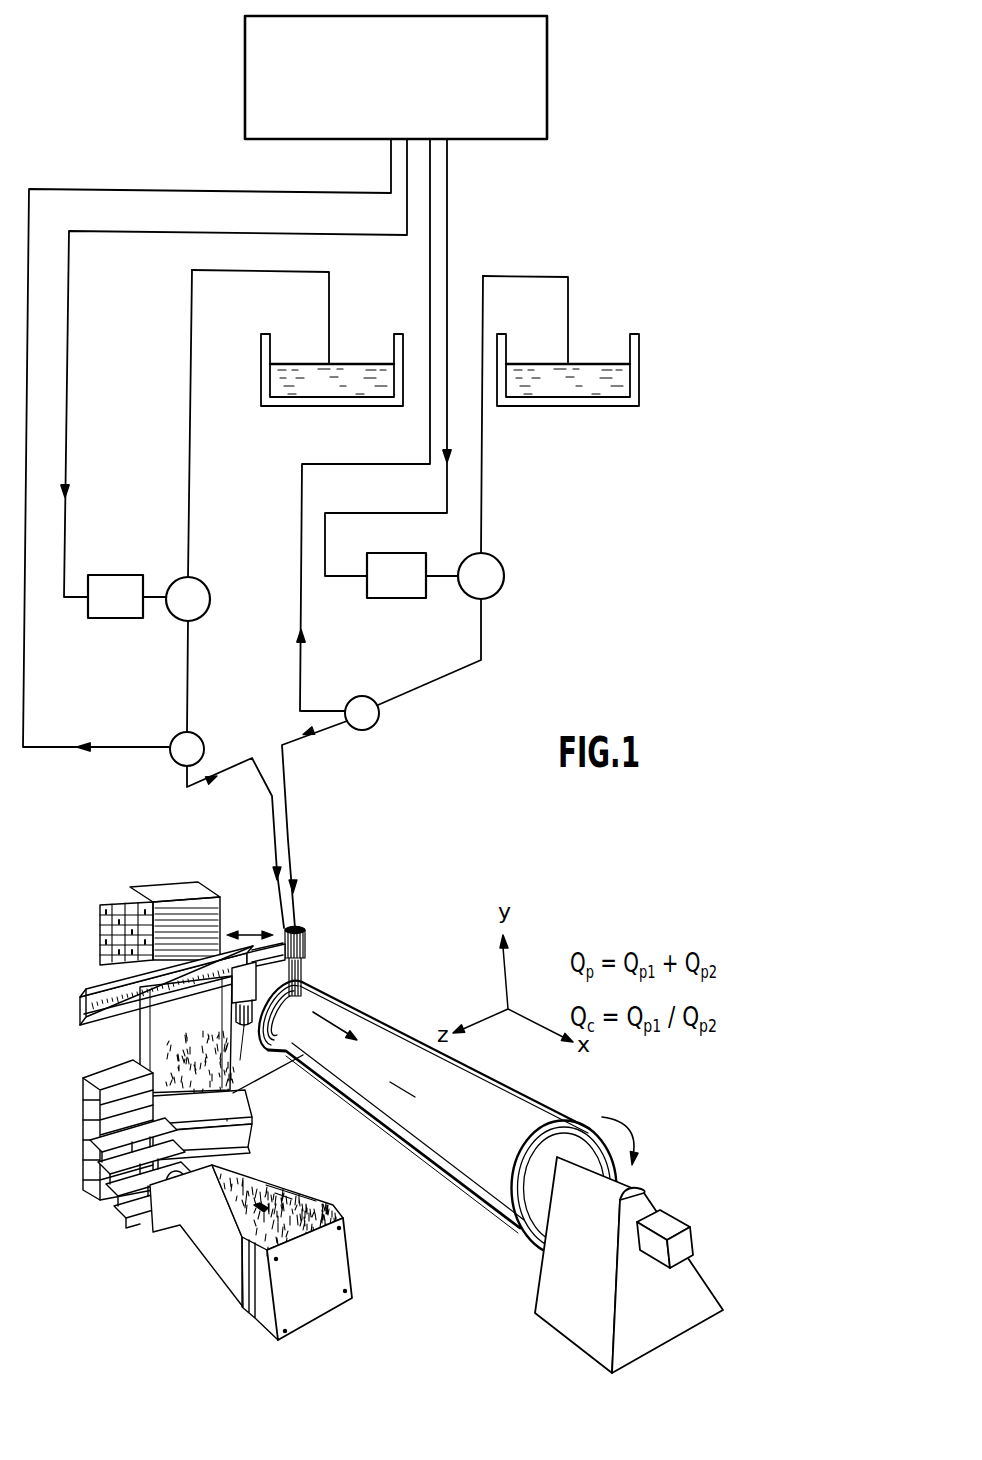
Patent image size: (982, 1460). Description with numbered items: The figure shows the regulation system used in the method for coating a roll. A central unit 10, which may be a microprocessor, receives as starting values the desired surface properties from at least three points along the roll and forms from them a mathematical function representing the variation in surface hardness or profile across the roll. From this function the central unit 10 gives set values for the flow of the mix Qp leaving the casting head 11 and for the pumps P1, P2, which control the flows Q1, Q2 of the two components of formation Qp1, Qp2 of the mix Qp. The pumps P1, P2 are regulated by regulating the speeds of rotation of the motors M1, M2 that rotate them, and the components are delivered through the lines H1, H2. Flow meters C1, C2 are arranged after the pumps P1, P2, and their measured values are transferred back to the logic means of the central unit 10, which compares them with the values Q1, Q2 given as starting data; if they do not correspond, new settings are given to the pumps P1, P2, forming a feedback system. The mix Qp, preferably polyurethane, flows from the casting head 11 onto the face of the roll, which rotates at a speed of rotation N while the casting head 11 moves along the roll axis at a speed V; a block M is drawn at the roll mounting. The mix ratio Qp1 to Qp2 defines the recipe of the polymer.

The central unit 10 is at (533, 75).
The casting head 11 is at (303, 933).
The first component of formation Qp1 is at (325, 383).
The second component of formation Qp2 is at (562, 383).
The first motor M1 is at (101, 604).
The second motor M2 is at (381, 581).
The first pump P1 is at (203, 601).
The second pump P2 is at (499, 578).
The first hose H1 is at (188, 666).
The second hose H2 is at (412, 688).
The first flow meter C1 is at (182, 758).
The second flow meter C2 is at (358, 723).
The flow of first component Q1 is at (220, 775).
The flow of second component Q2 is at (298, 738).
The mix Qp is at (322, 985).
The speed of movement of the casting head V is at (325, 1028).
The speed of rotation of the roll N is at (617, 1132).
The sensor block M is at (668, 1225).